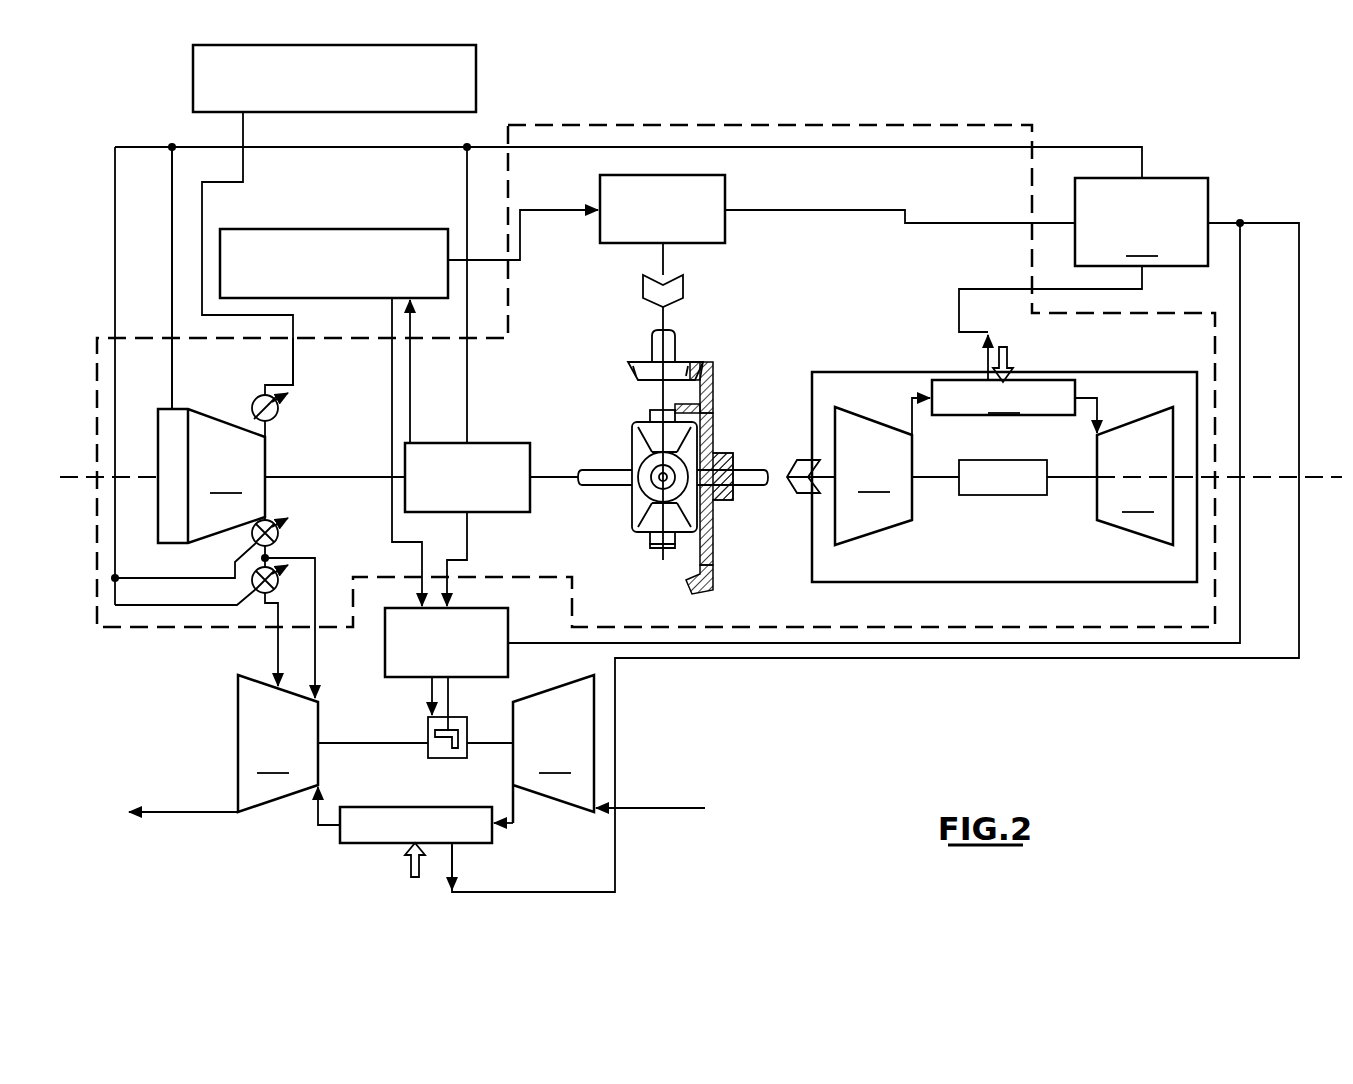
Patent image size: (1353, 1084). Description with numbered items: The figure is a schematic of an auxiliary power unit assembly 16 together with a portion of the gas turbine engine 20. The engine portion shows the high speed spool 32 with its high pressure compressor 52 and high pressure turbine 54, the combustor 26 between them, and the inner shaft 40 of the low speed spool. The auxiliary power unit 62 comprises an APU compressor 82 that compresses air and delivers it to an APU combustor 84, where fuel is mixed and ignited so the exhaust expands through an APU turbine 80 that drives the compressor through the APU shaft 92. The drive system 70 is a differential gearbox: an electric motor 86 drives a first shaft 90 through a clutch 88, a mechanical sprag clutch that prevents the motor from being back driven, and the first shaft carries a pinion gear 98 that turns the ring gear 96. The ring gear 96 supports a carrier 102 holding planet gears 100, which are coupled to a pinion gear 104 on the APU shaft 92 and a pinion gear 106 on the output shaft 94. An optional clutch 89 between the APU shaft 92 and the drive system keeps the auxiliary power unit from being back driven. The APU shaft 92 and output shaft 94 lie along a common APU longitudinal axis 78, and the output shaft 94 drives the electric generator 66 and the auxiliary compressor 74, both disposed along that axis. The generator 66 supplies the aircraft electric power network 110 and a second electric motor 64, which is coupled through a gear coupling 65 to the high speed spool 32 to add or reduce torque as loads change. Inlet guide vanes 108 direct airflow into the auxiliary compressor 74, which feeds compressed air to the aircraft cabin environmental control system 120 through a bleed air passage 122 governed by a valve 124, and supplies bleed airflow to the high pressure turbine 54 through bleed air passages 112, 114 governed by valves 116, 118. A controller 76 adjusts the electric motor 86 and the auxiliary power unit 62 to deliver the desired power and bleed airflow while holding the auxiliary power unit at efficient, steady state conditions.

The auxiliary power unit assembly 16 is at (925, 631).
The gas turbine engine 20 is at (255, 890).
The combustor 26 is at (364, 843).
The high speed spool 32 is at (241, 826).
The inner shaft 40 is at (347, 743).
The high pressure compressor 52 is at (553, 749).
The high pressure turbine 54 is at (278, 743).
The auxiliary power unit 62 is at (1047, 572).
The electric motor 64 is at (508, 652).
The gear coupling 65 is at (443, 764).
The electric generator 66 is at (495, 443).
The drive system 70 is at (745, 352).
The auxiliary compressor 74 is at (211, 476).
The controller 76 is at (1141, 222).
The APU longitudinal axis 78 is at (1253, 477).
The APU turbine 80 is at (1124, 471).
The APU compressor 82 is at (882, 471).
The APU combustor 84 is at (1003, 397).
The electric motor 86 is at (725, 192).
The clutch 88 is at (683, 292).
The clutch 89 is at (802, 458).
The first shaft 90 is at (655, 345).
The APU shaft 92 is at (745, 468).
The output shaft 94 is at (602, 468).
The ring gear 96 is at (715, 400).
The pinion gear 98 is at (680, 366).
The planet gears 100 is at (652, 425).
The carrier 102 is at (676, 548).
The pinion gear 104 is at (700, 505).
The pinion gear 106 is at (632, 503).
The inlet guide vanes 108 is at (172, 427).
The aircraft electric power network 110 is at (337, 229).
The bleed air passage 112 is at (277, 652).
The bleed air passage 114 is at (312, 598).
The valve 116 is at (245, 578).
The valve 118 is at (280, 545).
The aircraft cabin environmental control system 120 is at (476, 83).
The bleed air passage 122 is at (295, 360).
The valve 124 is at (277, 420).